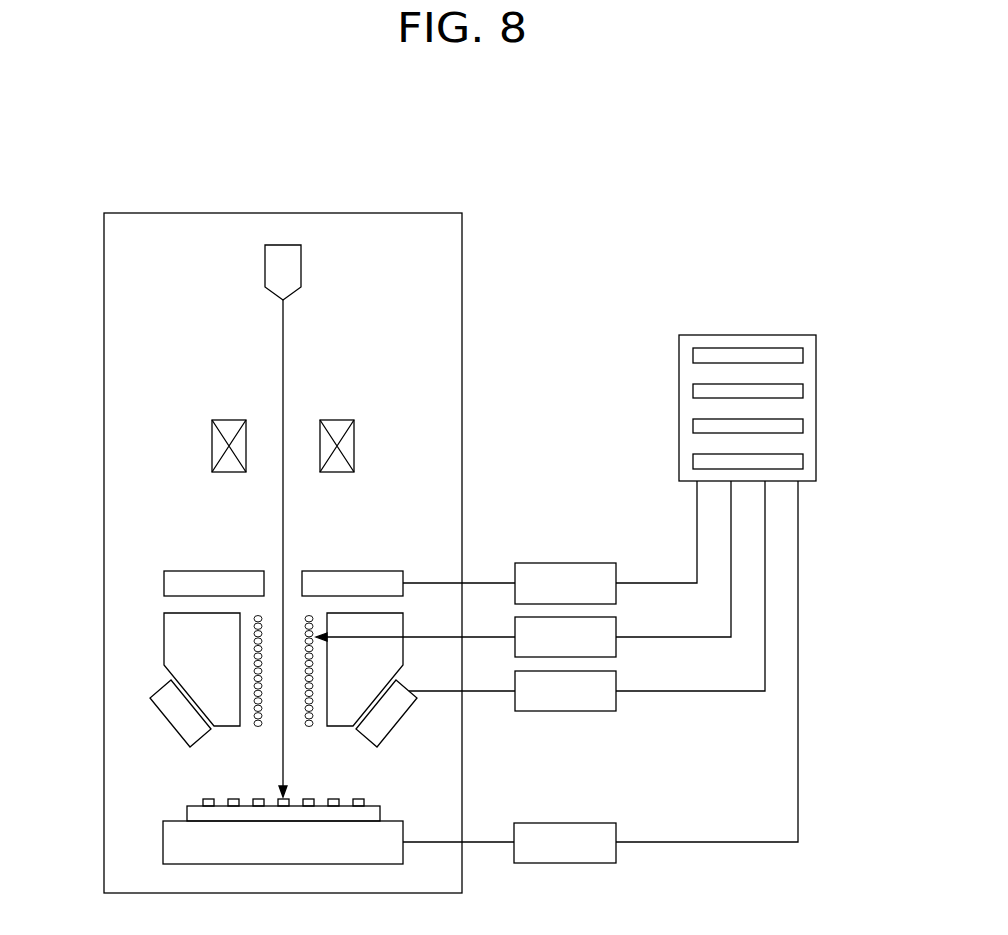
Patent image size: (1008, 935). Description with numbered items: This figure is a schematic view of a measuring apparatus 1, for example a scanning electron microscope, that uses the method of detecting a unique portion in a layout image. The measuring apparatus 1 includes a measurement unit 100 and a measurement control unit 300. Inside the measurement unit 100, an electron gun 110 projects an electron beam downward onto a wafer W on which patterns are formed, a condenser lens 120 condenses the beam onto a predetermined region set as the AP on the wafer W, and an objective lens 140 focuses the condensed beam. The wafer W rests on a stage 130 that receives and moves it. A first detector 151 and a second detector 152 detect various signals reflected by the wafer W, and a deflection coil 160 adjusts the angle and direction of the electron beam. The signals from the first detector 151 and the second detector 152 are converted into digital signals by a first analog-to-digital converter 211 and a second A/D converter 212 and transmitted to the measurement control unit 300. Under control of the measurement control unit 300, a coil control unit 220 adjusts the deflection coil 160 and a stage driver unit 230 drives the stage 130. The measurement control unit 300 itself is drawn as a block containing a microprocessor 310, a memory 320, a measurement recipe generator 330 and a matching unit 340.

The measuring apparatus 1 is at (454, 158).
The measurement unit 100 is at (462, 265).
The electron gun 110 is at (301, 265).
The condenser lens 120 is at (354, 443).
The stage 130 is at (163, 842).
The objective lens 140 is at (164, 638).
The first detector 151 is at (152, 723).
The second detector 152 is at (164, 583).
The deflection coil 160 is at (244, 672).
The wafer W is at (195, 813).
The first analog-to-digital converter 211 is at (616, 678).
The second A/D converter 212 is at (565, 563).
The coil control unit 220 is at (616, 625).
The stage driver unit 230 is at (566, 823).
The measurement control unit 300 is at (748, 335).
The microprocessor 310 is at (803, 352).
The memory 320 is at (803, 387).
The measurement recipe generator 330 is at (803, 422).
The matching unit 340 is at (803, 457).